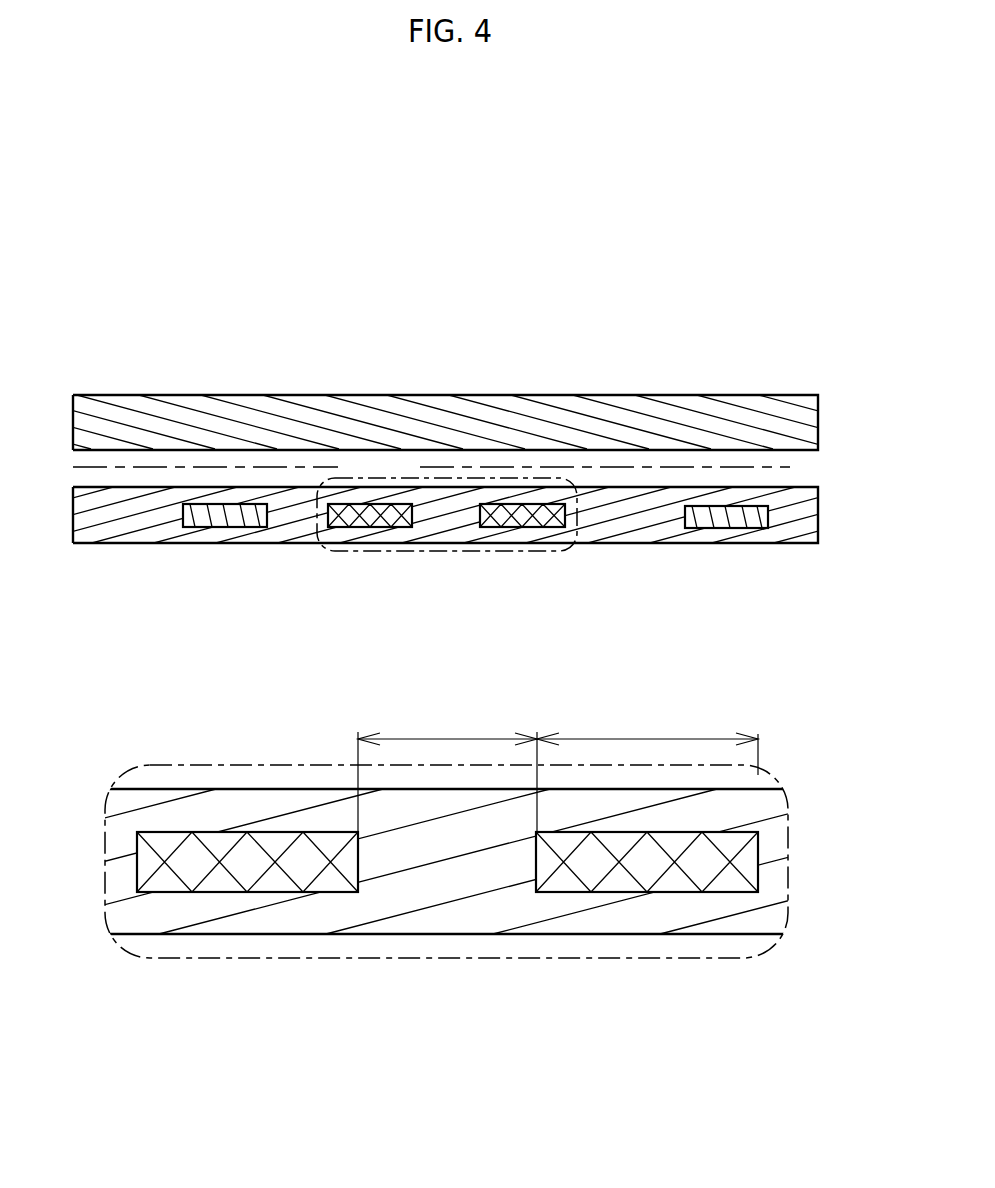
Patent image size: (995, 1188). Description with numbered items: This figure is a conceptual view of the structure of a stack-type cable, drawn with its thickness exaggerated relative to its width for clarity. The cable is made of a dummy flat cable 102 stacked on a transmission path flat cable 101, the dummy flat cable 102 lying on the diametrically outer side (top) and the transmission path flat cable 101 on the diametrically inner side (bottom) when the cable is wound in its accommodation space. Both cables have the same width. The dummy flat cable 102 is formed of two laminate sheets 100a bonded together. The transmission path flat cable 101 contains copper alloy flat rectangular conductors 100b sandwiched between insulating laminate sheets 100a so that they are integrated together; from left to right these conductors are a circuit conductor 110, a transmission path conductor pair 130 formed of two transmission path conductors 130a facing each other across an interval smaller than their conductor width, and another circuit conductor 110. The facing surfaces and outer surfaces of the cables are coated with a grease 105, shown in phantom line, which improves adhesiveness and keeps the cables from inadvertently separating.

The dummy flat cable 102 is at (818, 432).
The transmission path flat cable 101 is at (818, 525).
The grease 105 is at (790, 470).
The laminate sheet 100a is at (73, 420).
The flat rectangular conductor 100b is at (471, 755).
The circuit conductor 110 is at (229, 528).
The transmission path conductor 130a is at (382, 528).
The transmission path conductor pair 130 is at (613, 607).